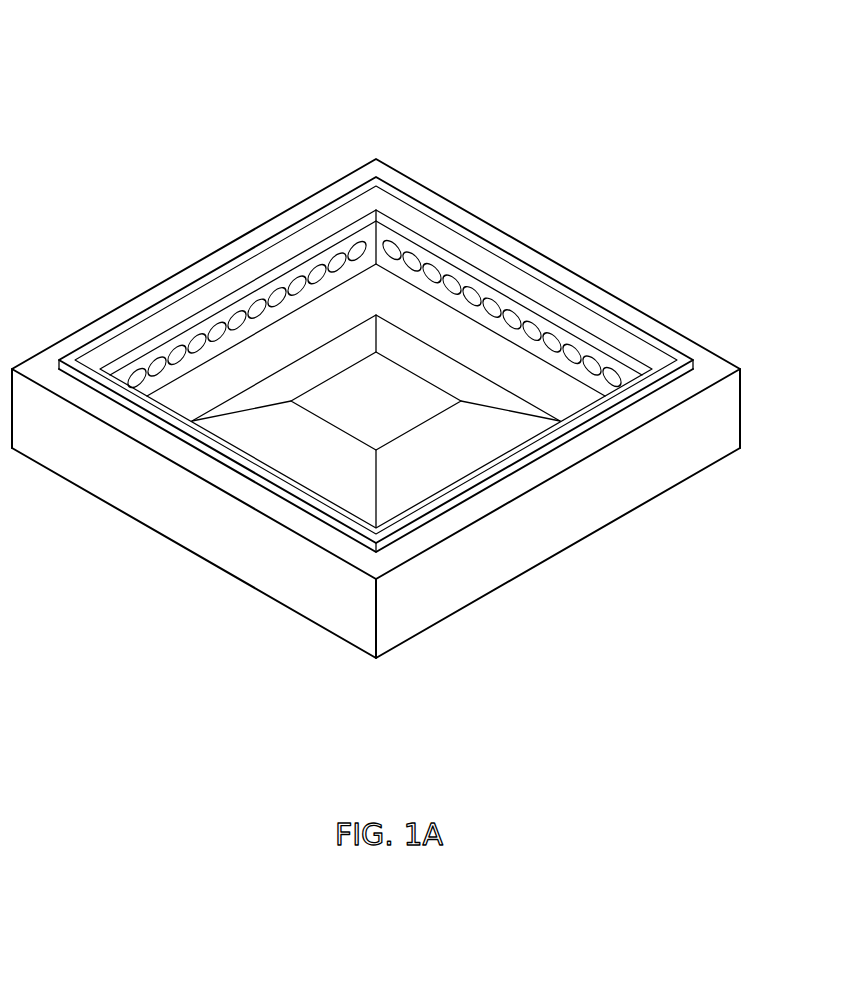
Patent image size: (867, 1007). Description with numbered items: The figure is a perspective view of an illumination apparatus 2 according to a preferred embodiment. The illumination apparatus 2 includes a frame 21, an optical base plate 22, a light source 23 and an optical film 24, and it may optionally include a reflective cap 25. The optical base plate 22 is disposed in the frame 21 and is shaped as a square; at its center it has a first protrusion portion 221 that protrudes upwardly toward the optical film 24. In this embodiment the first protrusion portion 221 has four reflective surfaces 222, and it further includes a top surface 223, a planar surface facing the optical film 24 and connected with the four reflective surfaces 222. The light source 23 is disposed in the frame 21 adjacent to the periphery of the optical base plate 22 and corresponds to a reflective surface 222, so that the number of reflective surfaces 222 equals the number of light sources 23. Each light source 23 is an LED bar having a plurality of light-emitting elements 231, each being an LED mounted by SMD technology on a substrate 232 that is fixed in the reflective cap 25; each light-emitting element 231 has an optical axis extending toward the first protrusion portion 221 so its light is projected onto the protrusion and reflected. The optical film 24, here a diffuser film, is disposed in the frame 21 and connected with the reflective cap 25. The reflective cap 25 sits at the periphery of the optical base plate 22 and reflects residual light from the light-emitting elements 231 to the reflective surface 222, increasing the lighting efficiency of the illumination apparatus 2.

The illumination apparatus 2 is at (376, 336).
The frame 21 is at (376, 408).
The optical base plate 22 is at (400, 415).
The first protrusion portion 221 is at (316, 434).
The reflective surface 222 is at (500, 397).
The top surface 223 is at (383, 377).
The light source 23 is at (376, 267).
The light-emitting element 231 is at (351, 225).
The substrate 232 is at (316, 272).
The optical film 24 is at (580, 295).
The reflective cap 25 is at (638, 322).